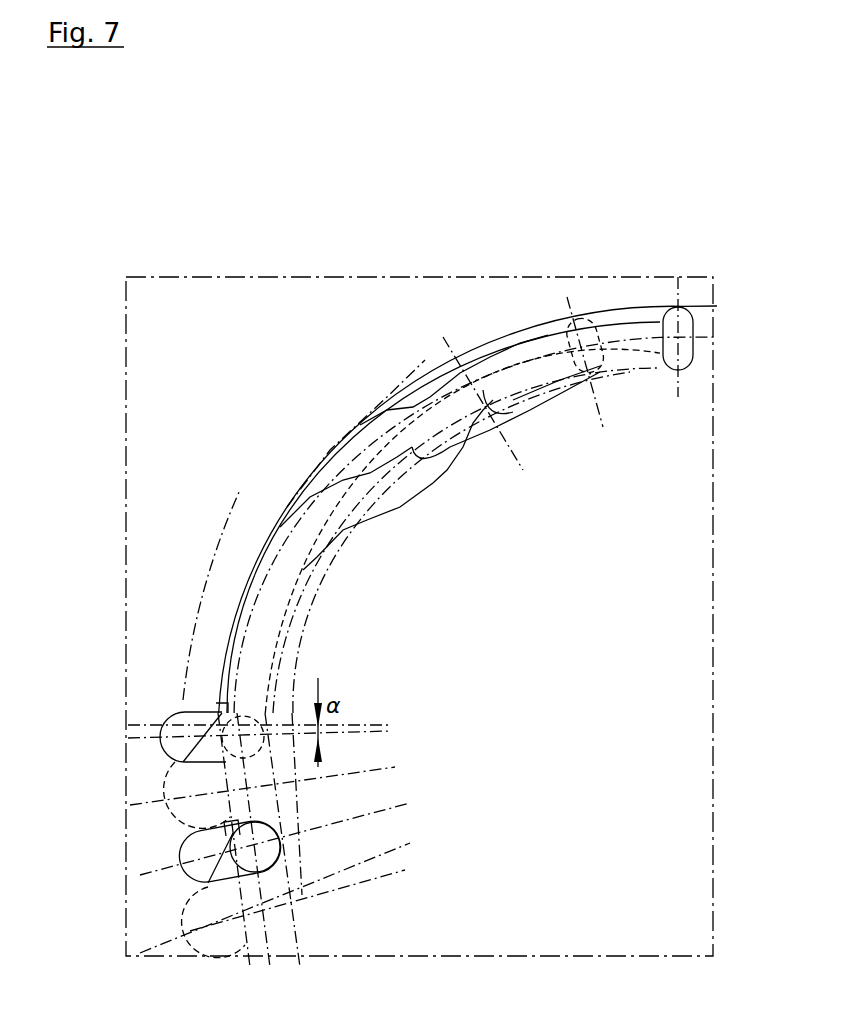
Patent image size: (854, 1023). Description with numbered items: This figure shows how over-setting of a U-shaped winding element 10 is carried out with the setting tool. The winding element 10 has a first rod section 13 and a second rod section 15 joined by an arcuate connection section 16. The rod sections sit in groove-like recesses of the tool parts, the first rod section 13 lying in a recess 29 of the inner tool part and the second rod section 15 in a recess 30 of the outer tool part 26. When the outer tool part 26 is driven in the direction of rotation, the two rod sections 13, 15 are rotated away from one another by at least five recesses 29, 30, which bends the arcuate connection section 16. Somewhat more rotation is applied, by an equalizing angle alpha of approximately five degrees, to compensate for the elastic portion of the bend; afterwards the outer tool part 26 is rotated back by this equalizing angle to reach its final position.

The winding element 10 is at (317, 423).
The first rod section 13 is at (608, 385).
The second rod section 15 is at (160, 752).
The arcuate connection section 16 is at (277, 472).
The outer tool part 26 is at (121, 640).
The groove-like recess 29 is at (582, 305).
The groove-like recess 30 is at (170, 853).